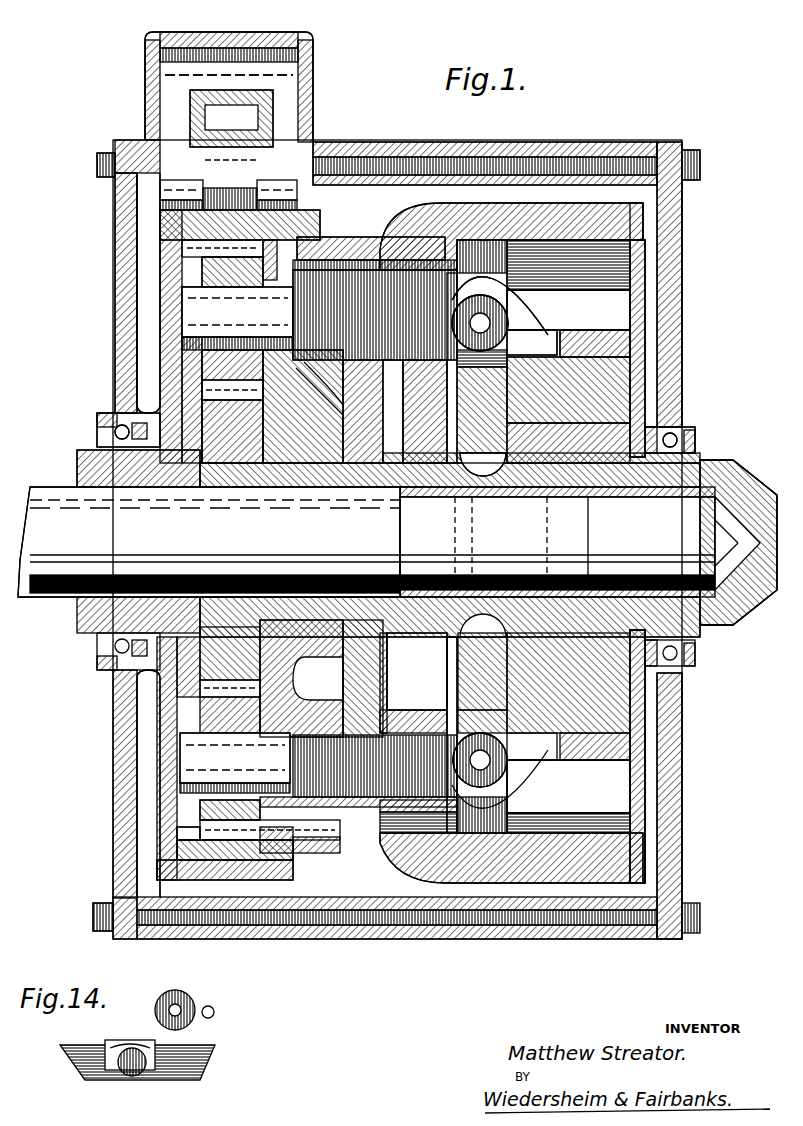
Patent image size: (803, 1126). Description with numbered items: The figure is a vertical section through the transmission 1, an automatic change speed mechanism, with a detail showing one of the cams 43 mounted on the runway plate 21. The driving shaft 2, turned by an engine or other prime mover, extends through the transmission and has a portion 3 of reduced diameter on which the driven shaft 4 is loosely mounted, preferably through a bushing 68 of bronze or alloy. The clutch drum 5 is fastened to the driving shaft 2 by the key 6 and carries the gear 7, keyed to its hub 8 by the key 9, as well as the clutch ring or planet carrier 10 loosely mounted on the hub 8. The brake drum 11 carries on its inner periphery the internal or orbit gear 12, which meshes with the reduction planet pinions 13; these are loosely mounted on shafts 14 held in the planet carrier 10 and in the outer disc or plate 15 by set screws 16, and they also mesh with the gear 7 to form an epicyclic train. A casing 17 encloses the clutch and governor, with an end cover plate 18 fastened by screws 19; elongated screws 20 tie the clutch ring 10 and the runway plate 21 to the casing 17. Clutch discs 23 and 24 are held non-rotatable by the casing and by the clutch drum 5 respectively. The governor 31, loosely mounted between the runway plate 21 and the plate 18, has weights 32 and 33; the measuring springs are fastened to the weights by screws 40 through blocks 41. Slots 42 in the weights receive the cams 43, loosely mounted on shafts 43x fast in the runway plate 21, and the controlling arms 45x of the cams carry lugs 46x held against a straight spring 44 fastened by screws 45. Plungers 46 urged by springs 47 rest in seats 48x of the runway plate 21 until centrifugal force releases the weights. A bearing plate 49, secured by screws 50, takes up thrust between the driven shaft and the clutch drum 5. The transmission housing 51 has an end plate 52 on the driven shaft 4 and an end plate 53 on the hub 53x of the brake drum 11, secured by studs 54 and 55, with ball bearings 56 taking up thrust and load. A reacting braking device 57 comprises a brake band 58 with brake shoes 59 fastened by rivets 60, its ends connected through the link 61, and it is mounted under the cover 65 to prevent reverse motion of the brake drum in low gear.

In FIG. 1, the transmission 1 is at (380, 539).
In FIG. 1, the driving shaft 2 is at (180, 180).
In FIG. 1, the portion of reduced diameter 3 is at (387, 260).
In FIG. 1, the driven shaft 4 is at (505, 270).
In FIG. 1, the clutch drum 5 is at (557, 323).
In FIG. 1, the key 6 is at (588, 313).
In FIG. 1, the gear 7 is at (232, 431).
In FIG. 1, the hub 8 is at (112, 413).
In FIG. 1, the key 9 is at (425, 411).
In FIG. 1, the clutch ring or planet carrier 10 is at (301, 678).
In FIG. 1, the brake drum 11 is at (315, 905).
In FIG. 1, the internal or orbit gear 12 is at (202, 262).
In FIG. 1, the reduction planet pinions 13 is at (177, 833).
In FIG. 1, the shafts 14 is at (236, 535).
In FIG. 1, the outer disc or plate 15 is at (202, 362).
In FIG. 1, the set screws 16 is at (183, 291).
In FIG. 1, the casing 17 is at (645, 206).
In FIG. 1, the end cover plate 18 is at (645, 250).
In FIG. 1, the screws 19 is at (645, 226).
In FIG. 1, the elongated screws 20 is at (511, 543).
In FIG. 1, the runway plate 21 is at (585, 270).
In FIG. 1, the clutch discs 23 is at (370, 256).
In FIG. 1, the clutch discs 24 is at (400, 262).
In FIG. 14, the governor 31 is at (70, 1056).
In FIG. 1, the weight 32 is at (570, 382).
In FIG. 1, the weight 33 is at (650, 722).
In FIG. 1, the screws 40 is at (683, 440).
In FIG. 1, the blocks 41 is at (450, 473).
In FIG. 1, the slots 42 is at (120, 1094).
In FIG. 1, the cams 43 is at (125, 1040).
In FIG. 1, the shafts 43x is at (468, 296).
In FIG. 1, the straight spring 44 is at (600, 300).
In FIG. 1, the screws 45 is at (645, 326).
In FIG. 1, the controlling arms 45x is at (540, 745).
In FIG. 1, the plungers 46 is at (585, 782).
In FIG. 1, the lugs 46x is at (600, 285).
In FIG. 1, the springs 47 is at (650, 700).
In FIG. 1, the seats 48x is at (470, 475).
In FIG. 1, the bearing plate 49 is at (445, 690).
In FIG. 1, the screws 50 is at (400, 645).
In FIG. 1, the transmission housing 51 is at (572, 143).
In FIG. 1, the end plate 52 is at (660, 342).
In FIG. 1, the end plate 53 is at (115, 192).
In FIG. 1, the hub 53x is at (77, 456).
In FIG. 1, the studs 54 is at (700, 162).
In FIG. 1, the studs 55 is at (106, 152).
In FIG. 1, the ball bearings 56 is at (105, 432).
In FIG. 1, the reacting braking device 57 is at (273, 116).
In FIG. 1, the brake band 58 is at (157, 870).
In FIG. 1, the brake shoes 59 is at (160, 222).
In FIG. 1, the rivets 60 is at (275, 905).
In FIG. 1, the link 61 is at (229, 76).
In FIG. 1, the cover 65 is at (314, 56).
In FIG. 1, the bushing 68 is at (726, 626).